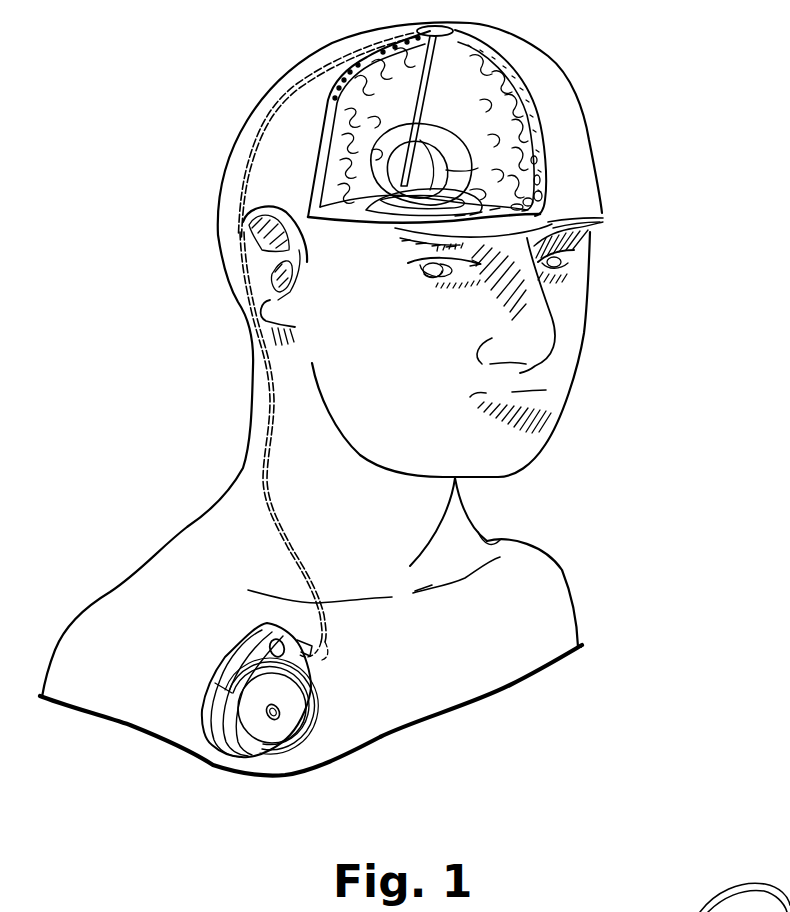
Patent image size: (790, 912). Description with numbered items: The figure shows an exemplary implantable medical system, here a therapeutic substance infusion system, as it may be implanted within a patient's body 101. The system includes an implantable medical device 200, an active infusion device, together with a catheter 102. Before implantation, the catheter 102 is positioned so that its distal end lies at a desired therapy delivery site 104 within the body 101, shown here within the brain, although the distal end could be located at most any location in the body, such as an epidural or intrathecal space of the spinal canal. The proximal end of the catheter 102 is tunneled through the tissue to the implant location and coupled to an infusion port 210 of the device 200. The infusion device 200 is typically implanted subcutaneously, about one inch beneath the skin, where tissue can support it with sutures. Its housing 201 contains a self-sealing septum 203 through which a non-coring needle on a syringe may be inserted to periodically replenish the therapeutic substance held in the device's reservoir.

The patient's body 101 is at (321, 398).
The catheter 102 is at (268, 395).
The therapy delivery site 104 is at (420, 173).
The implantable medical device 200 is at (270, 719).
The housing 201 is at (257, 715).
The self-sealing septum 203 is at (280, 722).
The infusion port 210 is at (328, 636).